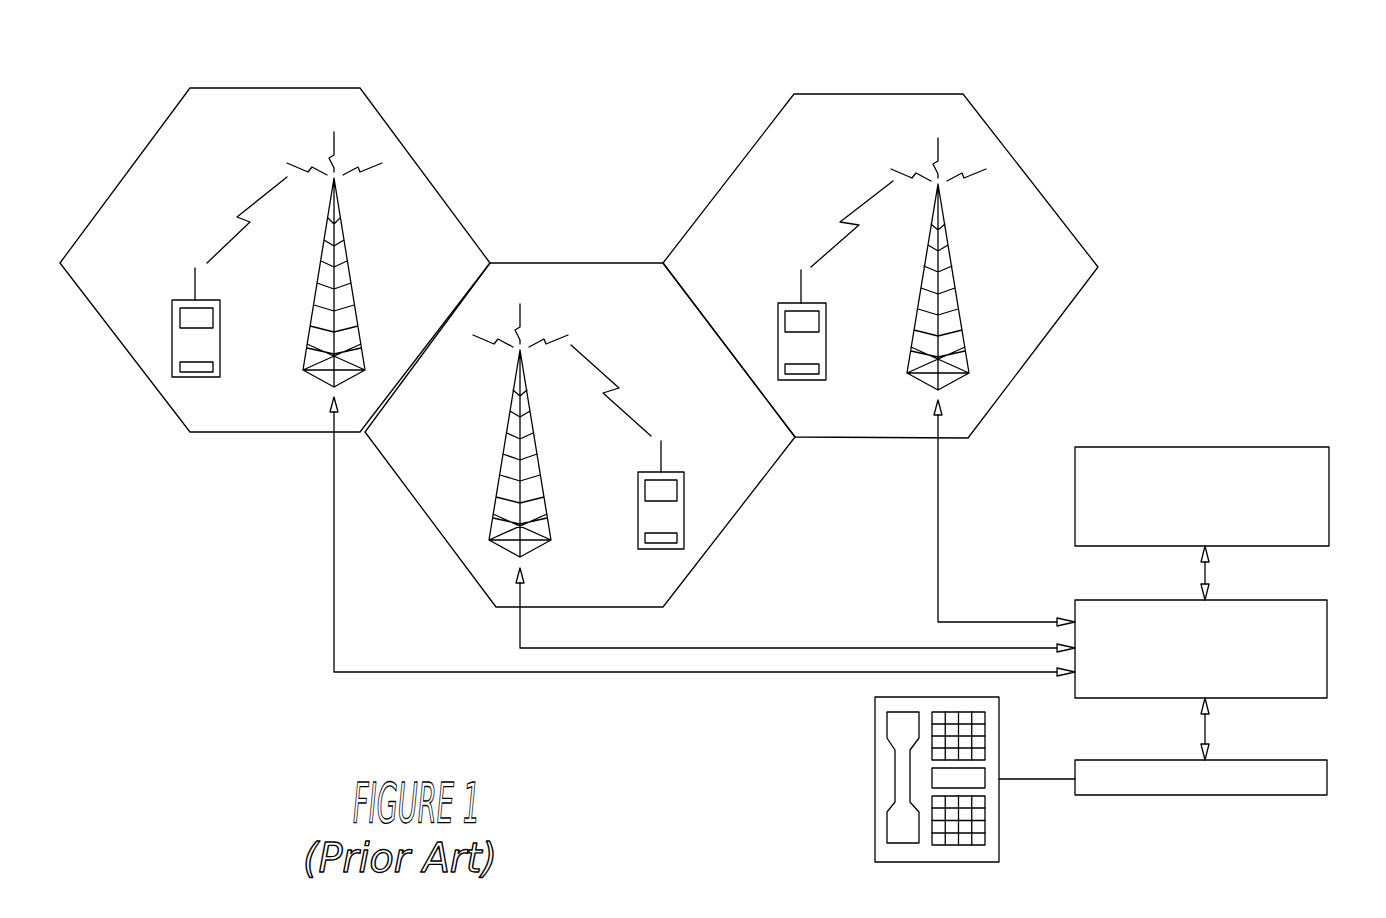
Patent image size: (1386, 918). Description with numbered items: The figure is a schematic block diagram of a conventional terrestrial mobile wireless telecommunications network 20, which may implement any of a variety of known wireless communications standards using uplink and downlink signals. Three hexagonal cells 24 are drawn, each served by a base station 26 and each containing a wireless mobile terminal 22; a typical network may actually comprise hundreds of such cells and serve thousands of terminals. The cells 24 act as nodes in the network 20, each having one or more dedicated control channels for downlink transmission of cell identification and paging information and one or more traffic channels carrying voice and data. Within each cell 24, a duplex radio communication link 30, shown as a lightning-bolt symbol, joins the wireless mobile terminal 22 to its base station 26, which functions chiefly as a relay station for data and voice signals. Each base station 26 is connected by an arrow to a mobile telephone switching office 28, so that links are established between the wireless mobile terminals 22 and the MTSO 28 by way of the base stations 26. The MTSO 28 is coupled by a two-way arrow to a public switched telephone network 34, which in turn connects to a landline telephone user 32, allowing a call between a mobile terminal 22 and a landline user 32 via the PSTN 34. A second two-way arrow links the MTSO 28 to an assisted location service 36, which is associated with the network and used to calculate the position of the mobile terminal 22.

The terrestrial mobile telecommunications network 20 is at (1108, 189).
The wireless mobile terminal 22 is at (220, 338).
The cell 24 is at (392, 131).
The base station 26 is at (364, 240).
The mobile telephone switching office 28 is at (1327, 660).
The radio communication link 30 is at (227, 181).
The landline telephone user 32 is at (999, 758).
The public switched telephone network 34 is at (1327, 782).
The assisted location service 36 is at (1329, 508).